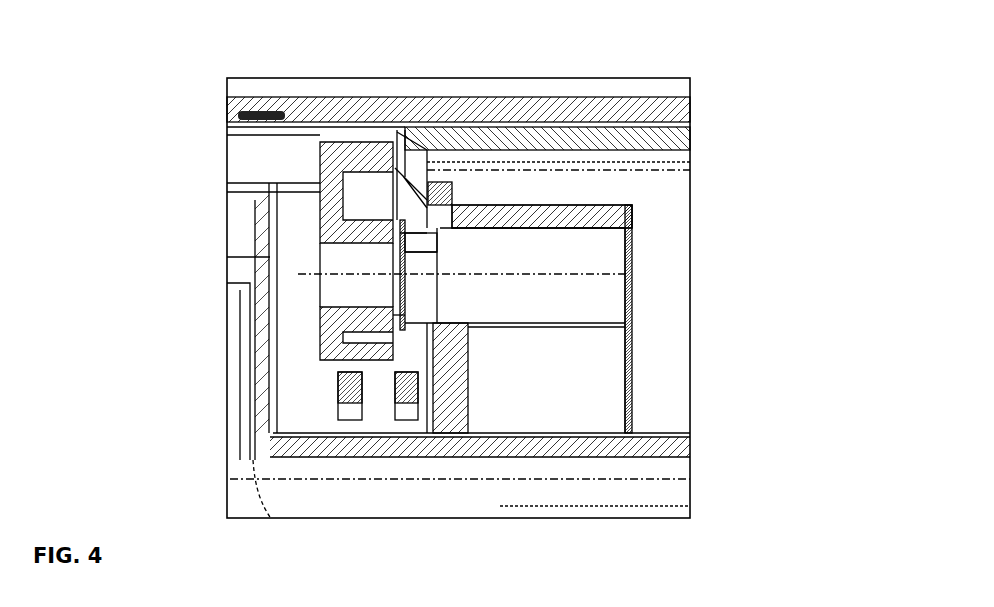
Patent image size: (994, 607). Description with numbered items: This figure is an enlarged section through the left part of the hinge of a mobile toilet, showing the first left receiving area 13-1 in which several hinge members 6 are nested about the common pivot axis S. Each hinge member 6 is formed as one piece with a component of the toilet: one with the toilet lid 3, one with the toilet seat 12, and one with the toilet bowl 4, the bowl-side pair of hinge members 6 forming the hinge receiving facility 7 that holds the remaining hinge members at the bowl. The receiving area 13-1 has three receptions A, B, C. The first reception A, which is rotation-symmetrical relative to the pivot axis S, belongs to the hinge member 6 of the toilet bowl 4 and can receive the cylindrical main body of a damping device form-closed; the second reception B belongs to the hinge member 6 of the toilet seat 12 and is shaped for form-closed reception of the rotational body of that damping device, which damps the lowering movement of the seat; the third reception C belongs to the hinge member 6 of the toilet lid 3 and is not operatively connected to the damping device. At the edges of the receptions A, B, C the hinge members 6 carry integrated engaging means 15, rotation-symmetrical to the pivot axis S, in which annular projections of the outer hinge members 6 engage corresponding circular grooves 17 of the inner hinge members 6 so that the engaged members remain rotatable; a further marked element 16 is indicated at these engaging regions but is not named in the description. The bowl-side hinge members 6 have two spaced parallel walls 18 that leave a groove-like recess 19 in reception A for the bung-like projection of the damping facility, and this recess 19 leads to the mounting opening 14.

The toilet lid 3 is at (363, 142).
The toilet bowl 4 is at (302, 442).
The hinge members 6 is at (333, 167).
The hinge receiving facility 7 is at (457, 383).
The toilet seat 12 is at (425, 150).
The first left receiving area 13-1 is at (648, 302).
The mounting opening 14 is at (691, 292).
The engaging means 15 is at (445, 192).
The ring element 16 is at (427, 233).
The circular grooves 17 is at (400, 330).
The parallel walls 18 is at (520, 413).
The groove-like recess 19 is at (554, 405).
The first reception A is at (563, 308).
The second reception B is at (431, 282).
The third reception C is at (362, 288).
The pivot axis S is at (659, 255).